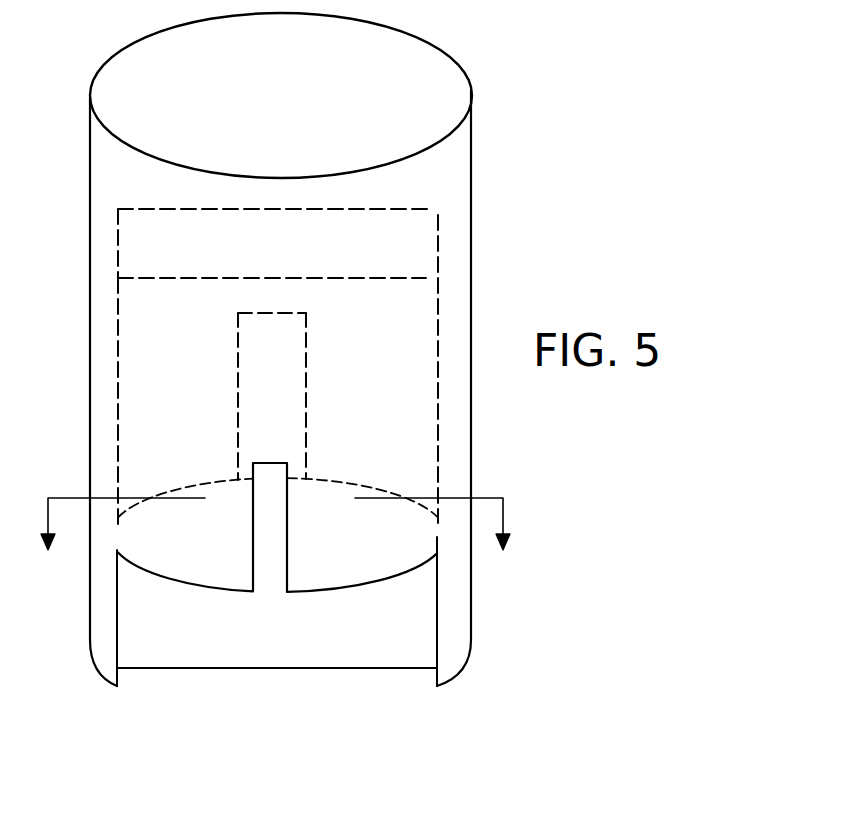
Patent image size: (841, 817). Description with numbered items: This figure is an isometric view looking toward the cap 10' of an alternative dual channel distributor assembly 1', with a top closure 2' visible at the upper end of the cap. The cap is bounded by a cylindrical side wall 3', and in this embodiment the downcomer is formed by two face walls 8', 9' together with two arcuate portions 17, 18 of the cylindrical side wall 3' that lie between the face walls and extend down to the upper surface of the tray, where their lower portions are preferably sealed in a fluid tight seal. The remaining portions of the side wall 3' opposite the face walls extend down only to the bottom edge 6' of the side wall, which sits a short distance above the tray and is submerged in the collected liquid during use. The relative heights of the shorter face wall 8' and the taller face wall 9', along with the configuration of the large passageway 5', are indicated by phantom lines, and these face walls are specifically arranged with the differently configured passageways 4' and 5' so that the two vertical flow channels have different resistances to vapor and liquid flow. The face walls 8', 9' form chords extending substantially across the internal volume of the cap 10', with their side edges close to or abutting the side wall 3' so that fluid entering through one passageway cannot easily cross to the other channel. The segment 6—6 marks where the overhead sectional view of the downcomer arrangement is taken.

The distributor assembly 1' is at (343, 381).
The top closure 2' is at (281, 95).
The cylindrical side wall 3' is at (280, 388).
The passageway 4' is at (307, 525).
The large passageway 5' is at (309, 396).
The bottom edge 6' is at (277, 563).
The face wall 8' is at (326, 444).
The face wall 9' is at (328, 213).
The cap 10' is at (324, 95).
The arcuate portion 17 is at (463, 663).
The arcuate portion 18 is at (93, 661).
The segment 6— 6 is at (275, 543).